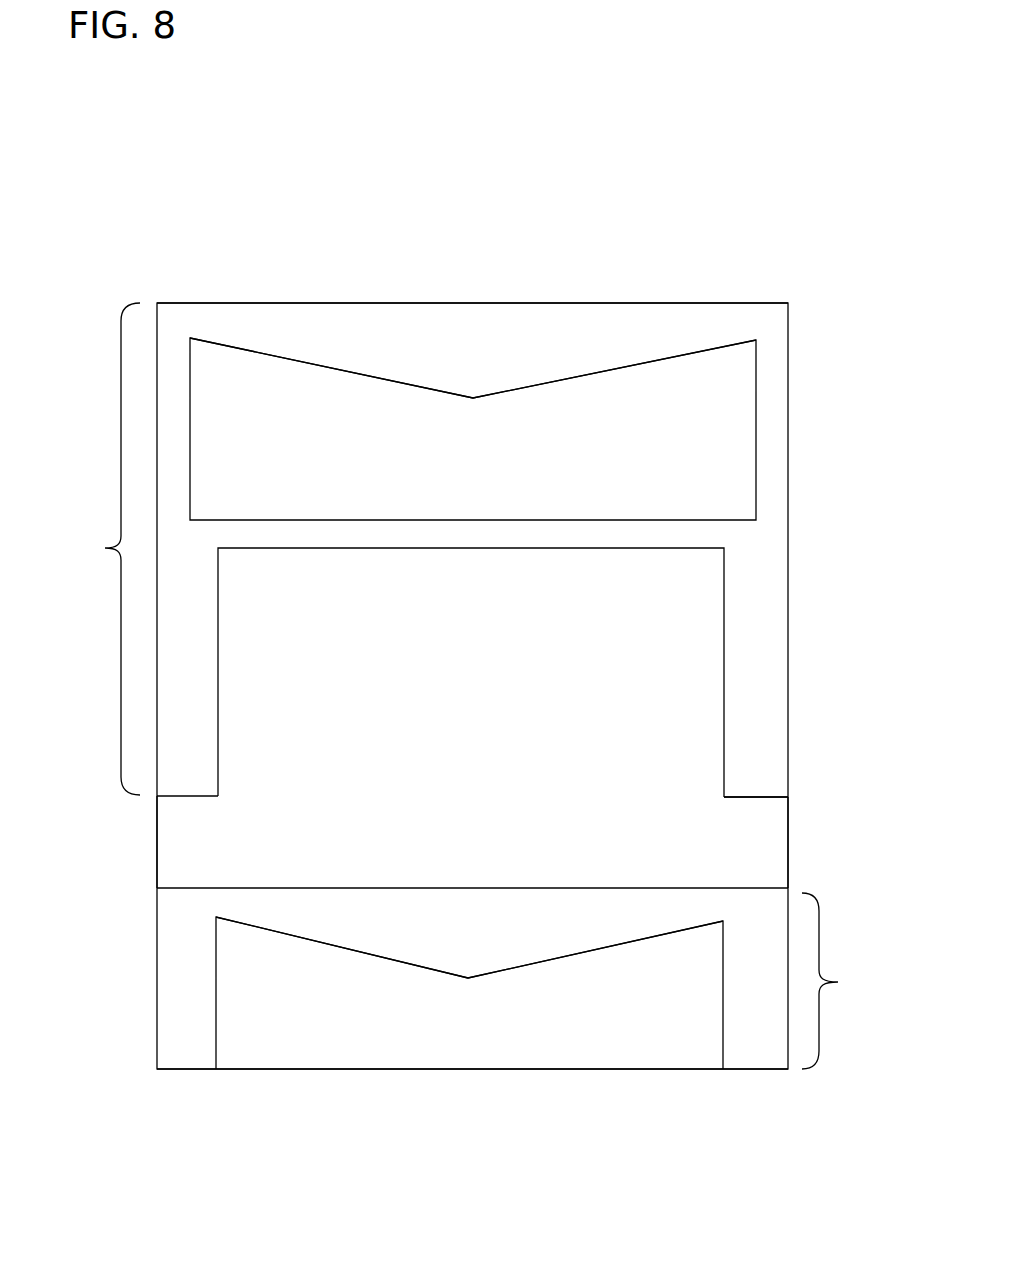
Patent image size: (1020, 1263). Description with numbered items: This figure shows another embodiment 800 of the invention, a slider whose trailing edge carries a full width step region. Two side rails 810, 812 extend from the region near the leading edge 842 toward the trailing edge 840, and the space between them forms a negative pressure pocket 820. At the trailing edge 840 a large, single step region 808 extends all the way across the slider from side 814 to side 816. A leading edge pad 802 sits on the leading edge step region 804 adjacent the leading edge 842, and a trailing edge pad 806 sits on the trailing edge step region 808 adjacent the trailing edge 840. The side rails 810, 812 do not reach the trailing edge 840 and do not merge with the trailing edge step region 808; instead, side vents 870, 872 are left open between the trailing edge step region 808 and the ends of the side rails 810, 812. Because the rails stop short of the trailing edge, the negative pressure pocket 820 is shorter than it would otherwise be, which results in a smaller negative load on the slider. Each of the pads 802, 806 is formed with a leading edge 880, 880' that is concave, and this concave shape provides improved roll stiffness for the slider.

The embodiment 800 is at (103, 293).
The leading edge pad 802 is at (228, 436).
The step region 804 is at (95, 549).
The trailing edge pad 806 is at (633, 1043).
The step region 808 is at (852, 981).
The side rail 810 is at (175, 710).
The side rail 812 is at (760, 674).
The side 814 is at (157, 832).
The side 816 is at (787, 860).
The negative pressure pocket 820 is at (663, 595).
The trailing edge 840 is at (260, 1069).
The leading edge 842 is at (233, 303).
The side vent 870 is at (173, 870).
The side vent 872 is at (752, 820).
The leading edge 880 is at (473, 356).
The leading edge 880' is at (469, 895).